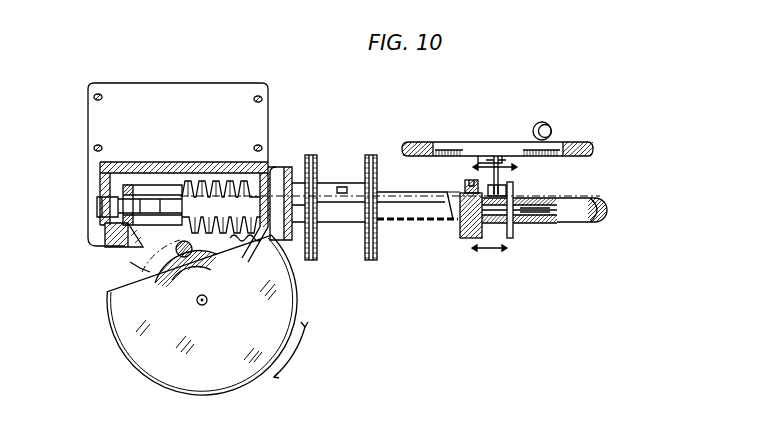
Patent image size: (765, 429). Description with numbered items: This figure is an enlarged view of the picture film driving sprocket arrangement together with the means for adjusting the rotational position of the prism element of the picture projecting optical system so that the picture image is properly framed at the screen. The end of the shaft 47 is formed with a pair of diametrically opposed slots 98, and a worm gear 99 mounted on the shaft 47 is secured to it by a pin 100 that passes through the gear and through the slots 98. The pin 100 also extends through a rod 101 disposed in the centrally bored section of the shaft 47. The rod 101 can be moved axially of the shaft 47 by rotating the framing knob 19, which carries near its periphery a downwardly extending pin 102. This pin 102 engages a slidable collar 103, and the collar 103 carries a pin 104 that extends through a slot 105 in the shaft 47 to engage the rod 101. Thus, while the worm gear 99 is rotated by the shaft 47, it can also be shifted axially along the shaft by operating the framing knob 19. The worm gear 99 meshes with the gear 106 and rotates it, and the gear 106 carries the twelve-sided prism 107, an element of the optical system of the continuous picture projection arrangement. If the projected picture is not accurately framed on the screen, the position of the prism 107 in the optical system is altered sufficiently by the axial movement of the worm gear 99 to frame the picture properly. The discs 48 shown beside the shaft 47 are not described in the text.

The framing knob 19 is at (525, 143).
The shaft 47 is at (421, 222).
The discs 48 is at (378, 248).
The slots 98 is at (123, 246).
The worm gear 99 is at (243, 180).
The pin 100 is at (135, 184).
The rod 101 is at (163, 190).
The pin 102 is at (489, 153).
The slidable collar 103 is at (467, 239).
The pin 104 is at (501, 186).
The slot 105 is at (458, 196).
The gear 106 is at (157, 272).
The twelve-sided prism 107 is at (274, 312).